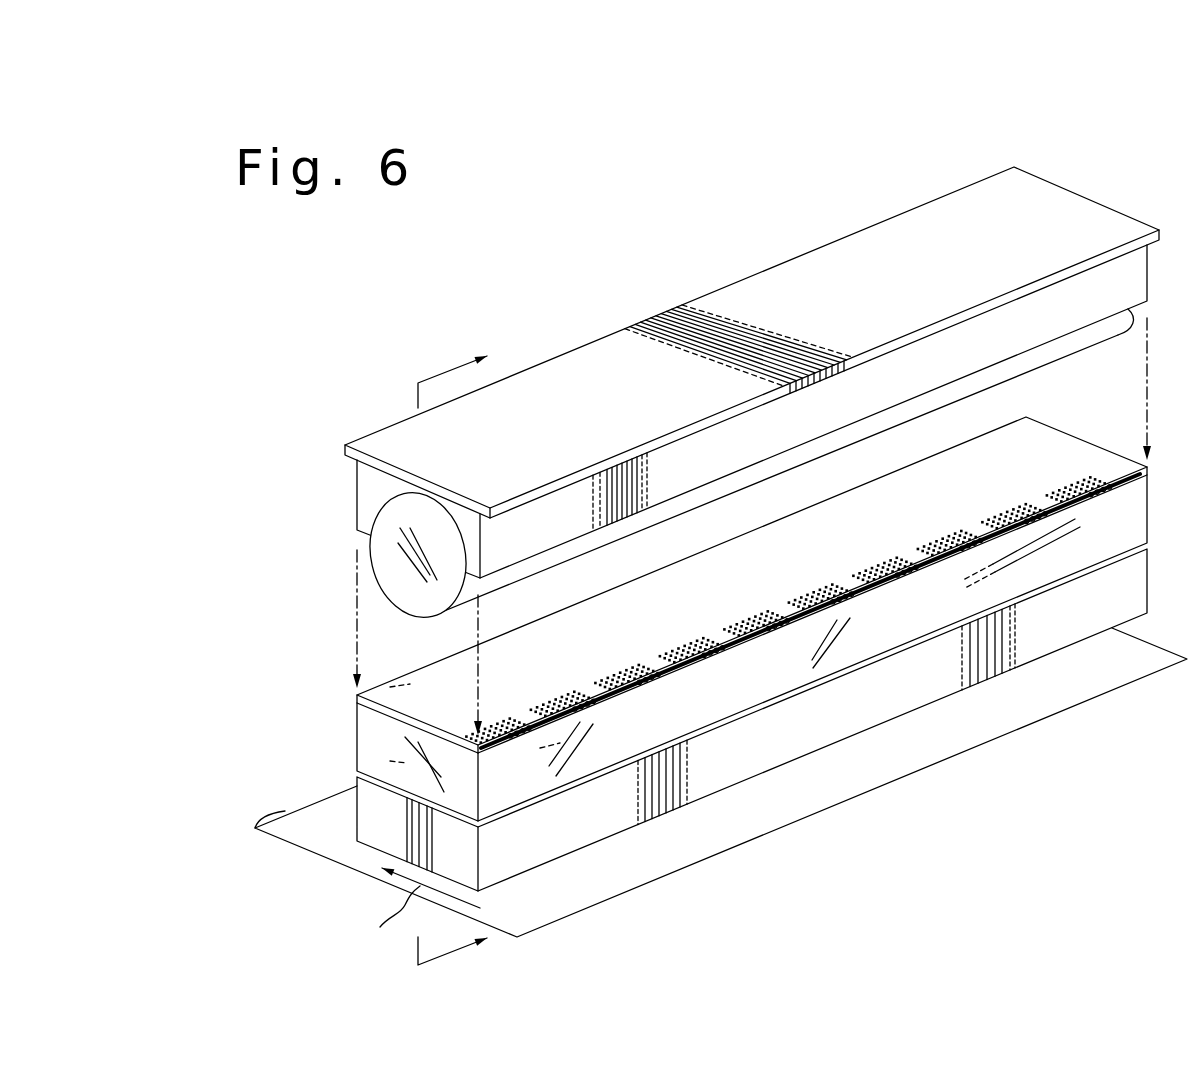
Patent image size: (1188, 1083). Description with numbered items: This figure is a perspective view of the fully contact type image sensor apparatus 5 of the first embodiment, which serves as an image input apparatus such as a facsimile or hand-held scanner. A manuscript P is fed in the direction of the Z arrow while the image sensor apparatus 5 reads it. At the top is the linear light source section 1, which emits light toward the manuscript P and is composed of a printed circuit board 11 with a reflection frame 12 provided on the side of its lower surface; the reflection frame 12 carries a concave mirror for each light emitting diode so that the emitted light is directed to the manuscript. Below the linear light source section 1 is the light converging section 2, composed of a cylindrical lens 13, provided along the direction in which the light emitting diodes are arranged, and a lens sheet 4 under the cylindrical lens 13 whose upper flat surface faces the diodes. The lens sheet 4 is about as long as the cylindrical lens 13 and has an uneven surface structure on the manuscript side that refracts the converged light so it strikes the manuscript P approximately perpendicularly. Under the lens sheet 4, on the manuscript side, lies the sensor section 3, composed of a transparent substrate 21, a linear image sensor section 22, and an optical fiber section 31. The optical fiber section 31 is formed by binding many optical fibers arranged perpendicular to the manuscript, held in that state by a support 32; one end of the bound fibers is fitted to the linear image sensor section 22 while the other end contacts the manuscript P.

The linear light source section 1 is at (275, 385).
The printed circuit board 11 is at (380, 441).
The reflection frame 12 is at (365, 488).
The cylindrical lens 13 is at (386, 545).
The light converging section 2 is at (275, 520).
The transparent substrate 21 is at (375, 761).
The linear image sensor section 22 is at (1040, 552).
The sensor section 3 is at (262, 710).
The optical fiber section 31 is at (403, 838).
The support 32 is at (370, 813).
The lens sheet 4 is at (388, 688).
The image sensor apparatus 5 is at (1134, 866).
The manuscript P is at (637, 876).